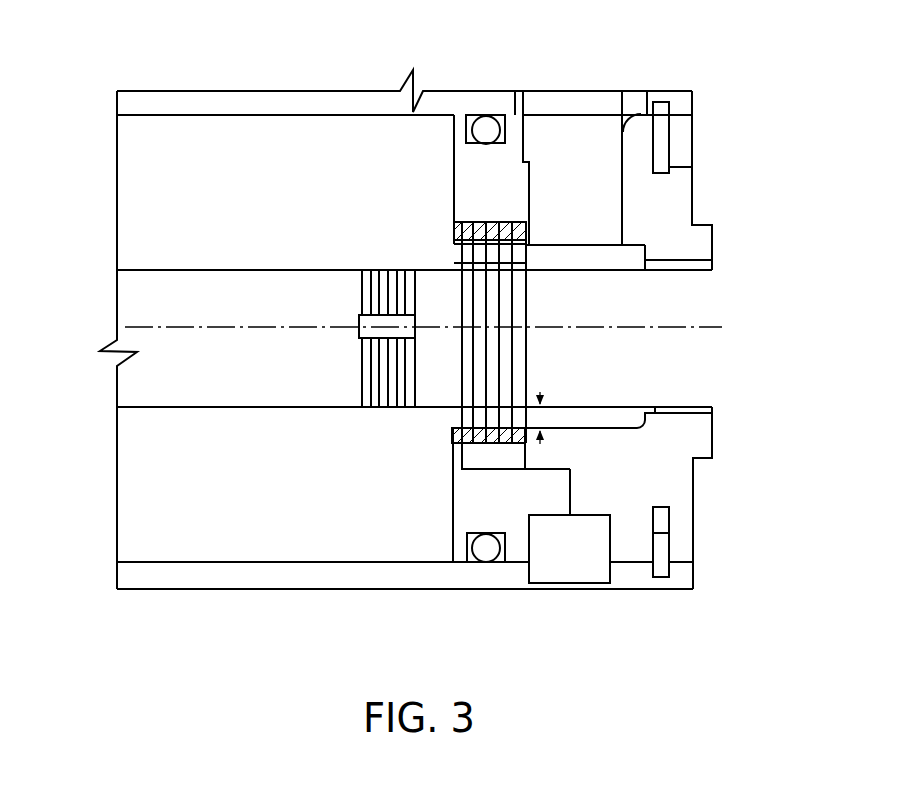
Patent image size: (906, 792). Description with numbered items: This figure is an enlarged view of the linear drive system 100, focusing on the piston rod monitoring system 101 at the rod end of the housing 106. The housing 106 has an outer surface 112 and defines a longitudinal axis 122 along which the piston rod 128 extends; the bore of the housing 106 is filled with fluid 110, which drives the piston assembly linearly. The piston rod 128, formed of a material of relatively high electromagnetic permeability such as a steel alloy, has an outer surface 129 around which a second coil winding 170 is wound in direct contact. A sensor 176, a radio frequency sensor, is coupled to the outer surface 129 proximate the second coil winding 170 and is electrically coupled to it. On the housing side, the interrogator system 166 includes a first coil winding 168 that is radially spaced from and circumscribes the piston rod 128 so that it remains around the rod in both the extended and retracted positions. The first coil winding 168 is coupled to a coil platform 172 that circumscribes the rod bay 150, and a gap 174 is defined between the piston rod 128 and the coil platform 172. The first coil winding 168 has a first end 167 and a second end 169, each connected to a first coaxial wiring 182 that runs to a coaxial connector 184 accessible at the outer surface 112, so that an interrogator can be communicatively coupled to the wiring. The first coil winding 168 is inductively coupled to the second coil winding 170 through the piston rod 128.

The linear drive system 100 is at (184, 60).
The piston rod monitoring system 101 is at (367, 240).
The housing 106 is at (254, 590).
The fluid 110 is at (195, 478).
The outer surface 112 is at (647, 590).
The longitudinal axis 122 is at (117, 323).
The piston rod 128 is at (117, 277).
The outer surface 129 is at (165, 287).
The rod bay 150 is at (653, 252).
The interrogator system 166 is at (551, 455).
The first end 167 is at (452, 462).
The first coil winding 168 is at (602, 258).
The second end 169 is at (525, 443).
The second coil winding 170 is at (362, 381).
The coil platform 172 is at (524, 217).
The gap 174 is at (546, 392).
The sensor 176 is at (362, 331).
The first coaxial wiring 182 is at (571, 490).
The coaxial connector 184 is at (563, 585).